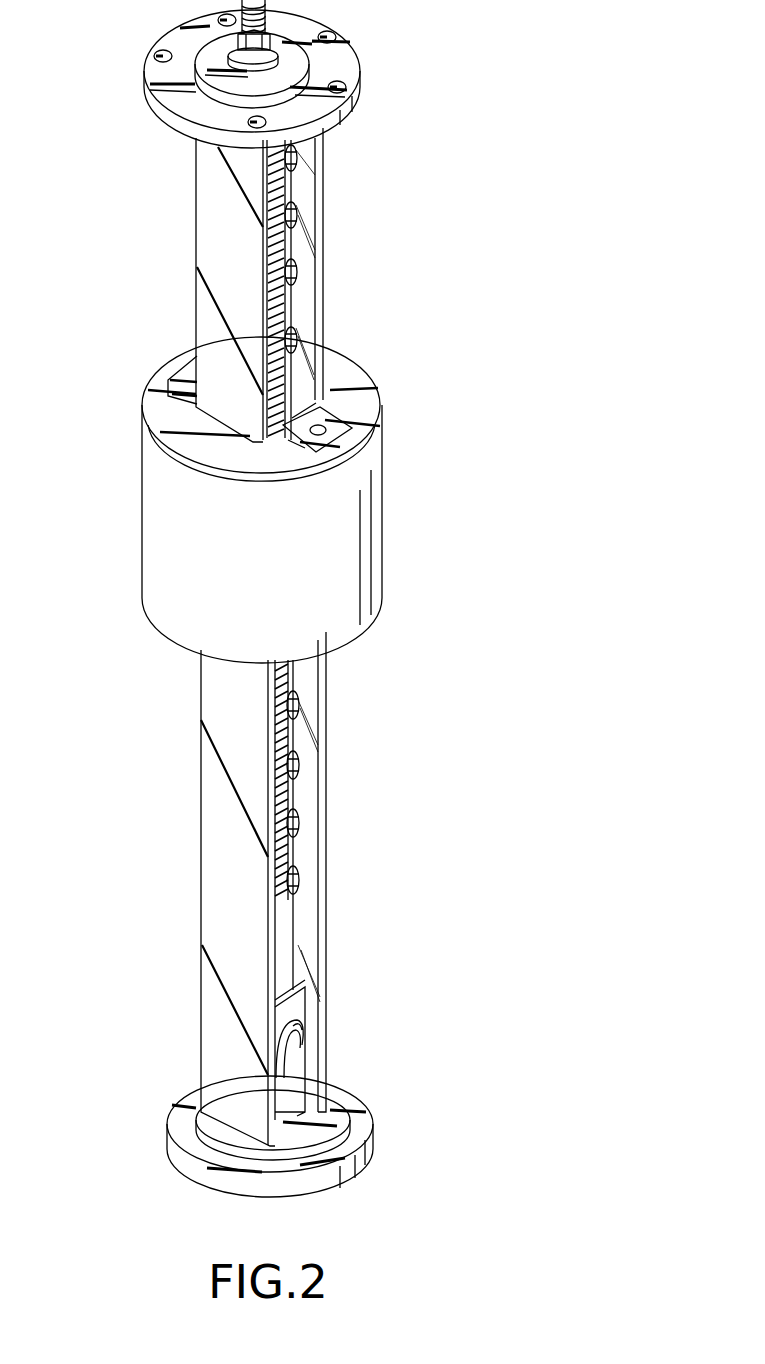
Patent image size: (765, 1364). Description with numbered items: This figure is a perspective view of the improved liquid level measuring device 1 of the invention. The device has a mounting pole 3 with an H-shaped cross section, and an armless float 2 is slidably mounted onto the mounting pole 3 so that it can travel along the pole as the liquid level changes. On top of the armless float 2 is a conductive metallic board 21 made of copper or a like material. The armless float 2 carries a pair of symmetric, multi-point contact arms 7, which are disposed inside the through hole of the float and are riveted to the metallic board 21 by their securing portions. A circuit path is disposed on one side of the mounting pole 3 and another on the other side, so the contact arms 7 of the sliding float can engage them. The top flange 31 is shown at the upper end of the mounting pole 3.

The liquid level measuring device 1 is at (342, 783).
The armless float 2 is at (290, 545).
The mounting pole 3 is at (325, 923).
The contact arm 7 is at (197, 363).
The conductive metallic board 21 is at (352, 382).
The top flange 31 is at (340, 127).